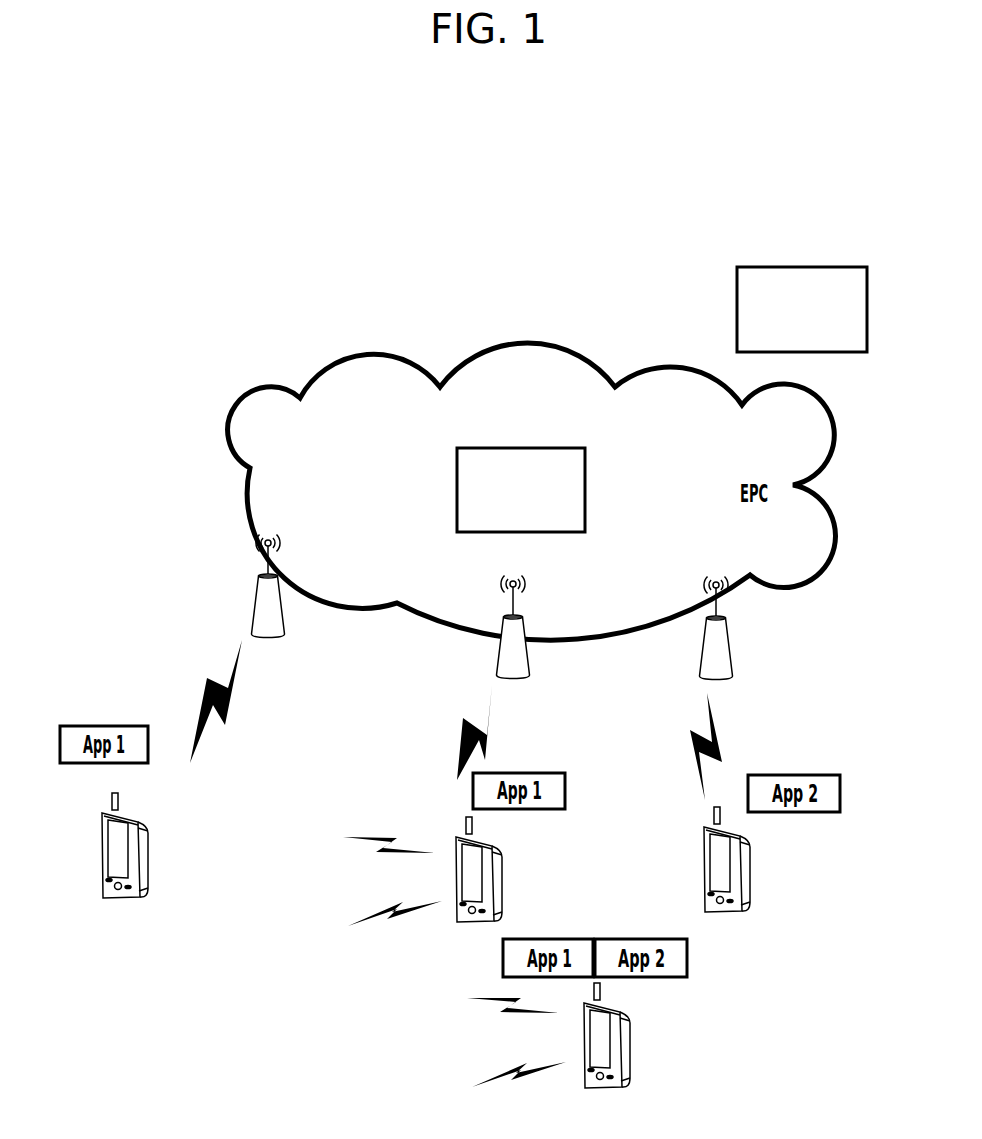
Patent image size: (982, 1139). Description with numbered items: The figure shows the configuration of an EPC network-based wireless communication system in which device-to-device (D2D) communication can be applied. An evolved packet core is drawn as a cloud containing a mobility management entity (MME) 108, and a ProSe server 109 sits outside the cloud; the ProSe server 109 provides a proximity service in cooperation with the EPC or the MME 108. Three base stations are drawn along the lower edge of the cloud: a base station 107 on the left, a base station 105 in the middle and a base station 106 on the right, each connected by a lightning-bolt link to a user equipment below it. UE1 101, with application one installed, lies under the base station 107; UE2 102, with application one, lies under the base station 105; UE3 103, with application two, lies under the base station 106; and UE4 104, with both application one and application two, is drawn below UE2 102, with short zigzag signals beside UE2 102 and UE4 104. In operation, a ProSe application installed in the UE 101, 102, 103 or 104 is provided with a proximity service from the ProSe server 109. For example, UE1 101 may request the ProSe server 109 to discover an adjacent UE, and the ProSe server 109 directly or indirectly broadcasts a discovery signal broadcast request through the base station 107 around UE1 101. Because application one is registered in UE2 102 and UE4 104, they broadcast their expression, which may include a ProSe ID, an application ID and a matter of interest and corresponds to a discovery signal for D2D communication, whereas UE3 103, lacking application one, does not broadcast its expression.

The UE1 101 is at (145, 848).
The UE2 102 is at (499, 868).
The UE3 103 is at (746, 862).
The UE4 104 is at (627, 1035).
The base station (eNB) 105 is at (523, 625).
The base station (eNB) 106 is at (732, 650).
The base station 107 is at (258, 595).
The mobility management entity (MME) 108 is at (522, 448).
The ProSe server 109 is at (802, 267).